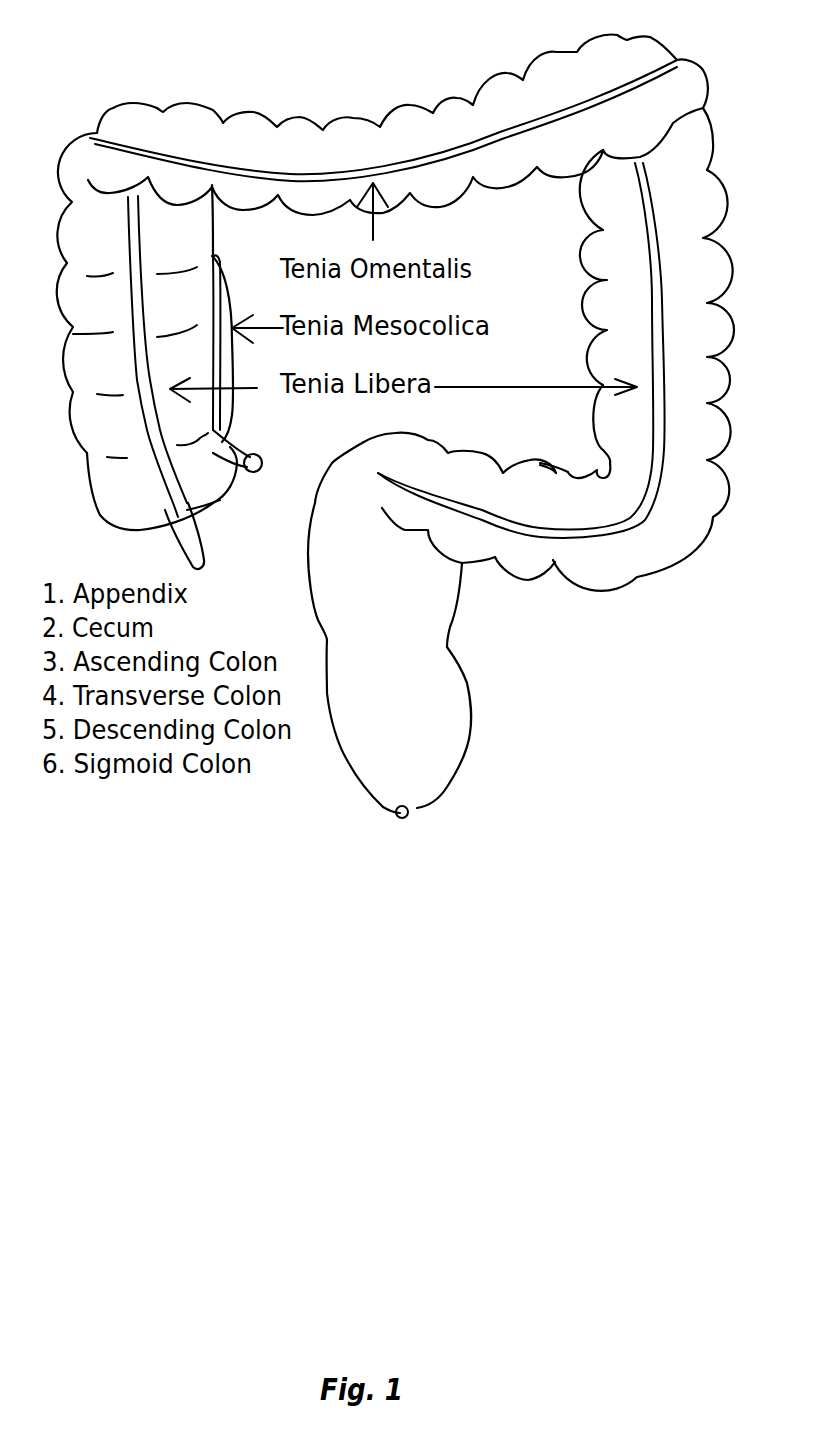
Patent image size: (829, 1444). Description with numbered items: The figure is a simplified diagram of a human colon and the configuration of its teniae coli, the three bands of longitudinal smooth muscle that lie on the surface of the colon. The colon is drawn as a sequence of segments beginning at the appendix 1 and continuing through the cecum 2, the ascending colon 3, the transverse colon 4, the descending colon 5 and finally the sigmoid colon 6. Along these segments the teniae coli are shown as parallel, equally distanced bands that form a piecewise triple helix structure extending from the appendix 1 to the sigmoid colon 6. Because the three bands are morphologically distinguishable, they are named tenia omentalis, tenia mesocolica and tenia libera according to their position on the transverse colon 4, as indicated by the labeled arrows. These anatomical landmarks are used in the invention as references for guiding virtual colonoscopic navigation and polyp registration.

The appendix 1 is at (201, 539).
The cecum 2 is at (174, 480).
The ascending colon 3 is at (145, 325).
The transverse colon 4 is at (400, 125).
The descending colon 5 is at (637, 370).
The sigmoid colon 6 is at (432, 625).